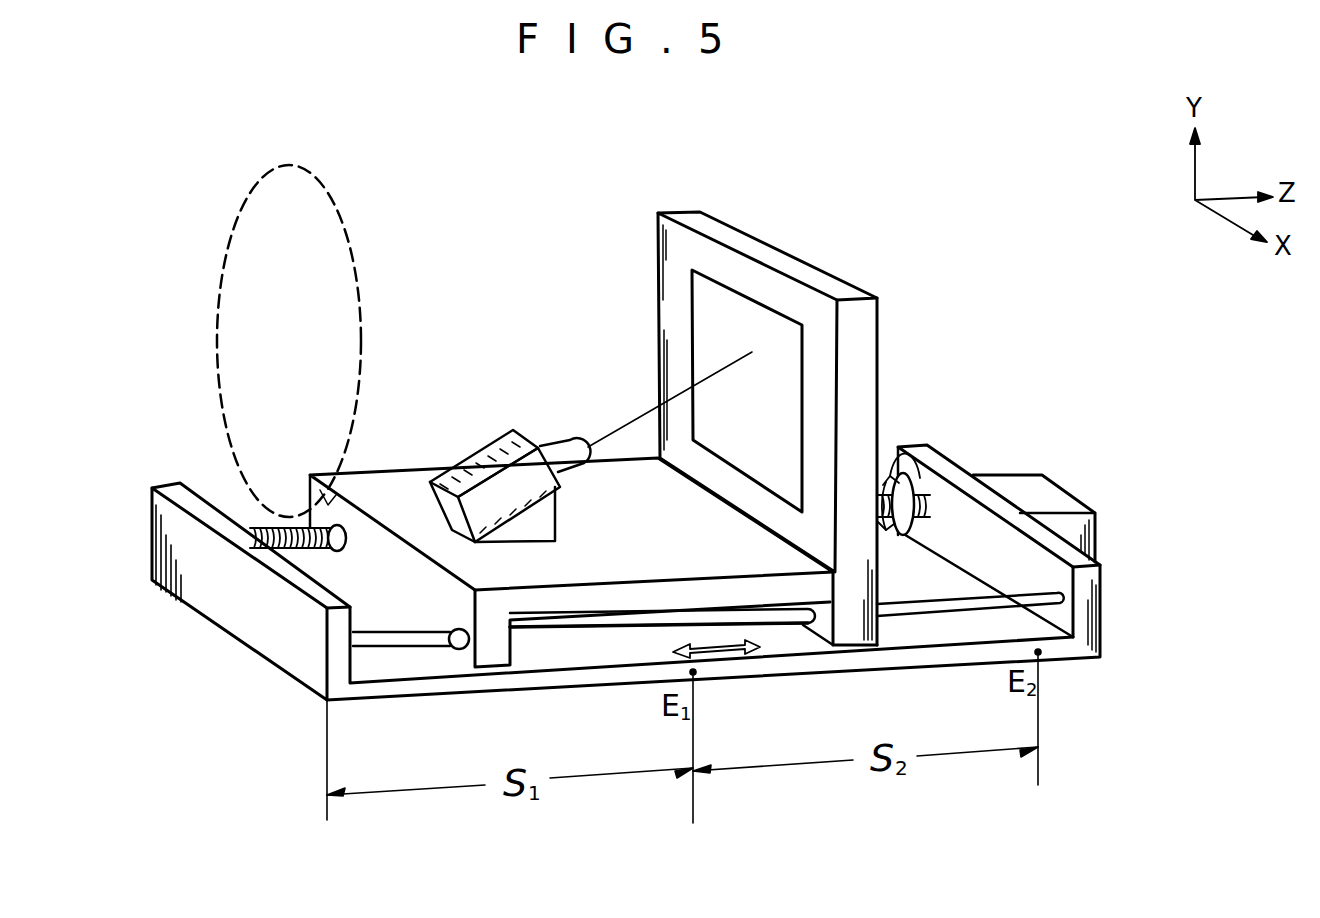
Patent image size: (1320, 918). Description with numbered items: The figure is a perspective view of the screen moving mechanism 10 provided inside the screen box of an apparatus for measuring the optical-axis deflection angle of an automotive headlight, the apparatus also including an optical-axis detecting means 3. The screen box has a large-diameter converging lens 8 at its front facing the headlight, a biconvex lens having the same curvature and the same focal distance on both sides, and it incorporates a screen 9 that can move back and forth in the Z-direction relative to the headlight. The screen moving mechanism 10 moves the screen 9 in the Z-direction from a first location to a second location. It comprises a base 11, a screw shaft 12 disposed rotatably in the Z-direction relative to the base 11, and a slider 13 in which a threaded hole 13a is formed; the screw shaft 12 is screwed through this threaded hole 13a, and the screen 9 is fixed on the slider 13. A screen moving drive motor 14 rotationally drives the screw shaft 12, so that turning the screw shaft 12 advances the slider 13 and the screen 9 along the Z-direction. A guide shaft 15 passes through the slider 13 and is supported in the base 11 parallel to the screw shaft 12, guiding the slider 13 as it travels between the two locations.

The optical-axis detecting means 3 is at (510, 437).
The converging lens 8 is at (217, 305).
The screen 9 is at (802, 300).
The screen moving mechanism 10 is at (985, 458).
The base 11 is at (303, 665).
The screw shaft 12 is at (906, 516).
The slider 13 is at (652, 538).
The threaded hole 13a is at (347, 535).
The screen moving drive motor 14 is at (1047, 497).
The guide shaft 15 is at (947, 612).